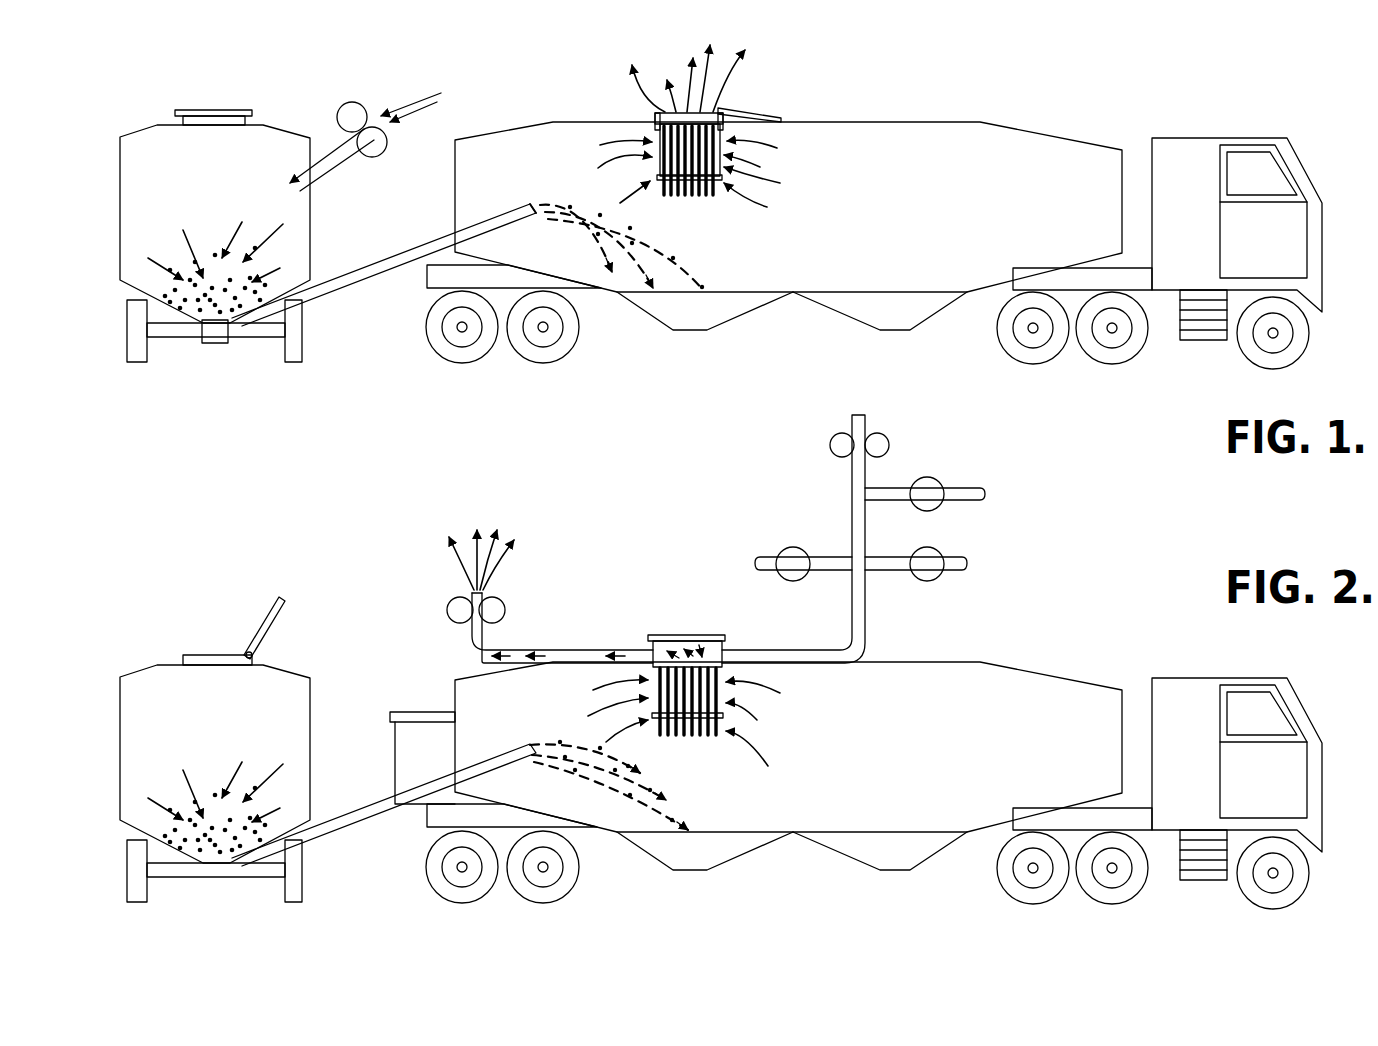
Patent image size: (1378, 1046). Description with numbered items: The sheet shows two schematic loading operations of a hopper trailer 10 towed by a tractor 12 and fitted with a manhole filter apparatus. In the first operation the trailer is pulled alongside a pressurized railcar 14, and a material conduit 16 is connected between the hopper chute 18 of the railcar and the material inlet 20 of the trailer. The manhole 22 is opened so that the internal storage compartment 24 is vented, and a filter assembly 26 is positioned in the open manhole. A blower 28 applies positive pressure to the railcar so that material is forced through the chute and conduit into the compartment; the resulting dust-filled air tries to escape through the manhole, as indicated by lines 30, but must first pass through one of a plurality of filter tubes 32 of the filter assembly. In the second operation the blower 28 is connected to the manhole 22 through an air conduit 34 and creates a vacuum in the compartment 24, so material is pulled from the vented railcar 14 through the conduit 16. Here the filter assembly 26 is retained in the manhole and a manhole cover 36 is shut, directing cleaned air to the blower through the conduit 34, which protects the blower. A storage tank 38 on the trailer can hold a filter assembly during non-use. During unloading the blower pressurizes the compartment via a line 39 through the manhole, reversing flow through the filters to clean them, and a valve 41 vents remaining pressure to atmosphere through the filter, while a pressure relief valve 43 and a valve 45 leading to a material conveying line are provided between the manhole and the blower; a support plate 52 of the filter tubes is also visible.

In FIG. 1, the hopper trailer 10 is at (874, 228).
In FIG. 2, the hopper trailer 10 is at (874, 772).
In FIG. 1, the tractor 12 is at (1237, 134).
In FIG. 2, the tractor 12 is at (1198, 678).
In FIG. 1, the railcar 14 is at (146, 132).
In FIG. 2, the railcar 14 is at (164, 670).
In FIG. 1, the material conduit 16 is at (402, 267).
In FIG. 2, the material conduit 16 is at (360, 808).
In FIG. 1, the hopper chute 18 is at (220, 343).
In FIG. 1, the material inlet 20 is at (452, 232).
In FIG. 1, the manhole 22 is at (693, 148).
In FIG. 2, the manhole 22 is at (704, 693).
In FIG. 1, the internal storage compartment 24 is at (862, 144).
In FIG. 2, the internal storage compartment 24 is at (935, 673).
In FIG. 1, the filter assembly 26 is at (745, 163).
In FIG. 2, the filter assembly 26 is at (688, 742).
In FIG. 1, the blower 28 is at (386, 158).
In FIG. 2, the blower 28 is at (507, 604).
In FIG. 1, the lines indicating escaping air 30 is at (598, 166).
In FIG. 2, the lines indicating escaping air 30 is at (783, 694).
In FIG. 1, the filter tubes 32 is at (673, 196).
In FIG. 2, the filter tubes 32 is at (662, 738).
In FIG. 2, the air conduit 34 is at (561, 650).
In FIG. 2, the manhole cover 36 is at (692, 639).
In FIG. 2, the storage tank 38 is at (400, 754).
In FIG. 2, the line 39 is at (858, 627).
In FIG. 2, the valve 41 is at (931, 548).
In FIG. 2, the pressure relief valve 43 is at (800, 580).
In FIG. 2, the valve 45 is at (914, 508).
In FIG. 1, the filter tube support plate 52 is at (694, 197).
In FIG. 2, the filter tube support plate 52 is at (712, 737).